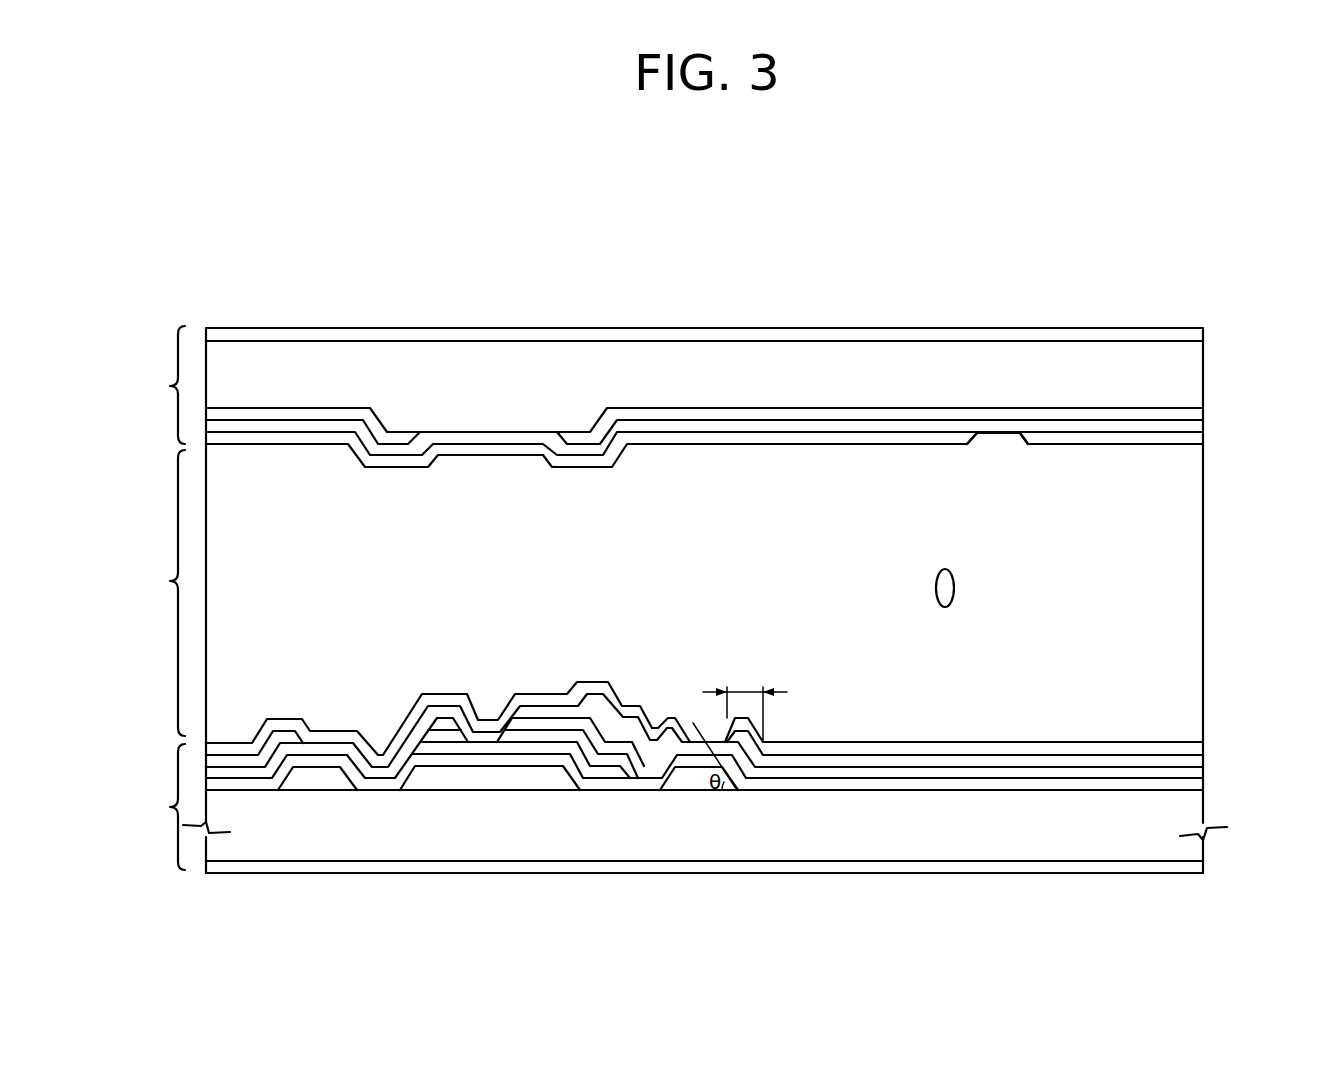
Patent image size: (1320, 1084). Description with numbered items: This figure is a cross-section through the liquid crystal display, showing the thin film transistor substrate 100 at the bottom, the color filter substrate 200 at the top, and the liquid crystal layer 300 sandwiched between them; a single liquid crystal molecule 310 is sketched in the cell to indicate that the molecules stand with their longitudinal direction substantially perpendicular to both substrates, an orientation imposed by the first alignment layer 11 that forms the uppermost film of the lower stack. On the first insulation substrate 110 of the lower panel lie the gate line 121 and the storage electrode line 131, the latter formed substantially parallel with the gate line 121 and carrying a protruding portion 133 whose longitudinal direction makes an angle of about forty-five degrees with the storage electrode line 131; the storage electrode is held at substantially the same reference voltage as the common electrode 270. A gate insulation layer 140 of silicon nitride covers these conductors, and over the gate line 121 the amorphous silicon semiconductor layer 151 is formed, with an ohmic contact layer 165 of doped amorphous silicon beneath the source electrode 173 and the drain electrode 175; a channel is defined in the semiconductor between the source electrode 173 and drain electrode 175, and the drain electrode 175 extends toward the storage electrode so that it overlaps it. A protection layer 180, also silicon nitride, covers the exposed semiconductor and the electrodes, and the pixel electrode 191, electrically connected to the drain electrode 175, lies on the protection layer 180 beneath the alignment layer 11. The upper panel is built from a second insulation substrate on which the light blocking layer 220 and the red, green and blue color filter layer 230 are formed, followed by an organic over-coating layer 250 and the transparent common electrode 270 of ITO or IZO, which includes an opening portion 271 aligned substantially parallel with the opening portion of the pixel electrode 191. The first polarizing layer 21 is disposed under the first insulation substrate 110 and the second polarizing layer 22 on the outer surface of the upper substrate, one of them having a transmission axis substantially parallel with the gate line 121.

The first alignment layer 11 is at (1193, 752).
The first polarizing layer 21 is at (835, 868).
The second polarizing layer 22 is at (302, 335).
The thin film transistor substrate 100 is at (150, 807).
The first insulation substrate 110 is at (312, 847).
The gate line 121 is at (465, 777).
The storage electrode line 131 is at (298, 778).
The protruding portion 133 is at (687, 777).
The gate insulation layer 140 is at (613, 777).
The semiconductor layer 151 is at (635, 773).
The ohmic contact 165 is at (557, 728).
The source electrode 173 is at (543, 737).
The drain electrode 175 is at (433, 727).
The protection layer 180 is at (903, 773).
The pixel electrode 191 is at (612, 708).
The color filter substrate 200 is at (150, 385).
The light blocking layer 220 is at (455, 416).
The color filter layer 230 is at (703, 417).
The over-coating layer 250 is at (787, 427).
The common electrode 270 is at (900, 442).
The opening portion 271 is at (1003, 442).
The liquid crystal layer 300 is at (150, 593).
The liquid crystal molecules 310 is at (955, 588).